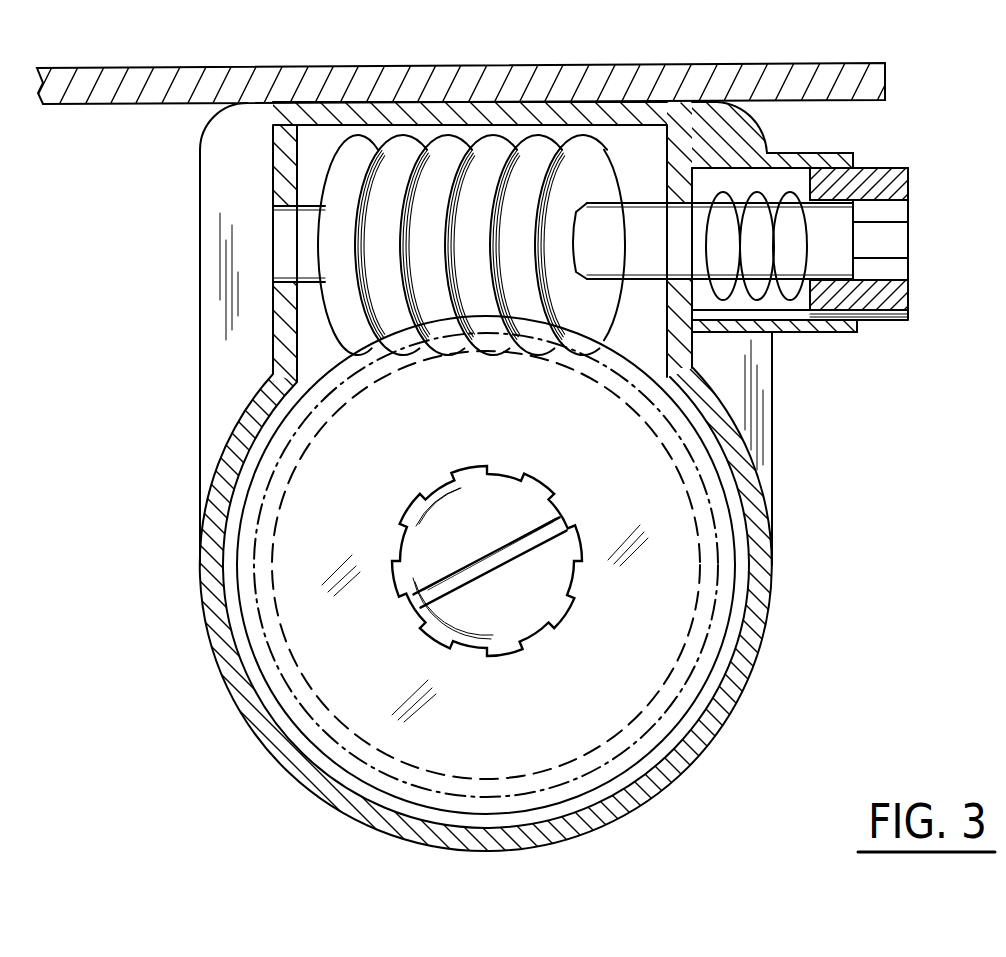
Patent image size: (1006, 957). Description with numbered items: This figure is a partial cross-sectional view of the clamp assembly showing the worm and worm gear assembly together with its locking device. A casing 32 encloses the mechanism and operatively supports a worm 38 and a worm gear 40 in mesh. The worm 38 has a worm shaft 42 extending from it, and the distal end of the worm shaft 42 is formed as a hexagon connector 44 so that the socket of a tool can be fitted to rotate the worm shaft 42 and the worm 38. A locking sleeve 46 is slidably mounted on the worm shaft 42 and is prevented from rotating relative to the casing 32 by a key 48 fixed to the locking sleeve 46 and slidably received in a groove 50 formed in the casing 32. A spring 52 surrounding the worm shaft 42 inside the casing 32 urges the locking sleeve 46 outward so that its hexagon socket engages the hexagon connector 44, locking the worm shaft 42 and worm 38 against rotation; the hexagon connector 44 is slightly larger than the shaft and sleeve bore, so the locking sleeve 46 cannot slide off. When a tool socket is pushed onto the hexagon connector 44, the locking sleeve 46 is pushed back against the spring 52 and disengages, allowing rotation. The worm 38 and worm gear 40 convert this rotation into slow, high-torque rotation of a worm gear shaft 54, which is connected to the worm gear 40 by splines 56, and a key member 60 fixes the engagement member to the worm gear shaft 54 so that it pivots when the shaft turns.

The casing 32 is at (200, 590).
The worm 38 is at (333, 253).
The worm gear 40 is at (270, 653).
The worm shaft 42 is at (637, 228).
The hexagon connector 44 is at (888, 240).
The locking sleeve 46 is at (877, 168).
The key 48 is at (882, 314).
The groove 50 is at (780, 315).
The spring 52 is at (752, 200).
The worm gear shaft 54 is at (555, 575).
The splines 56 is at (567, 618).
The key member 60 is at (555, 525).